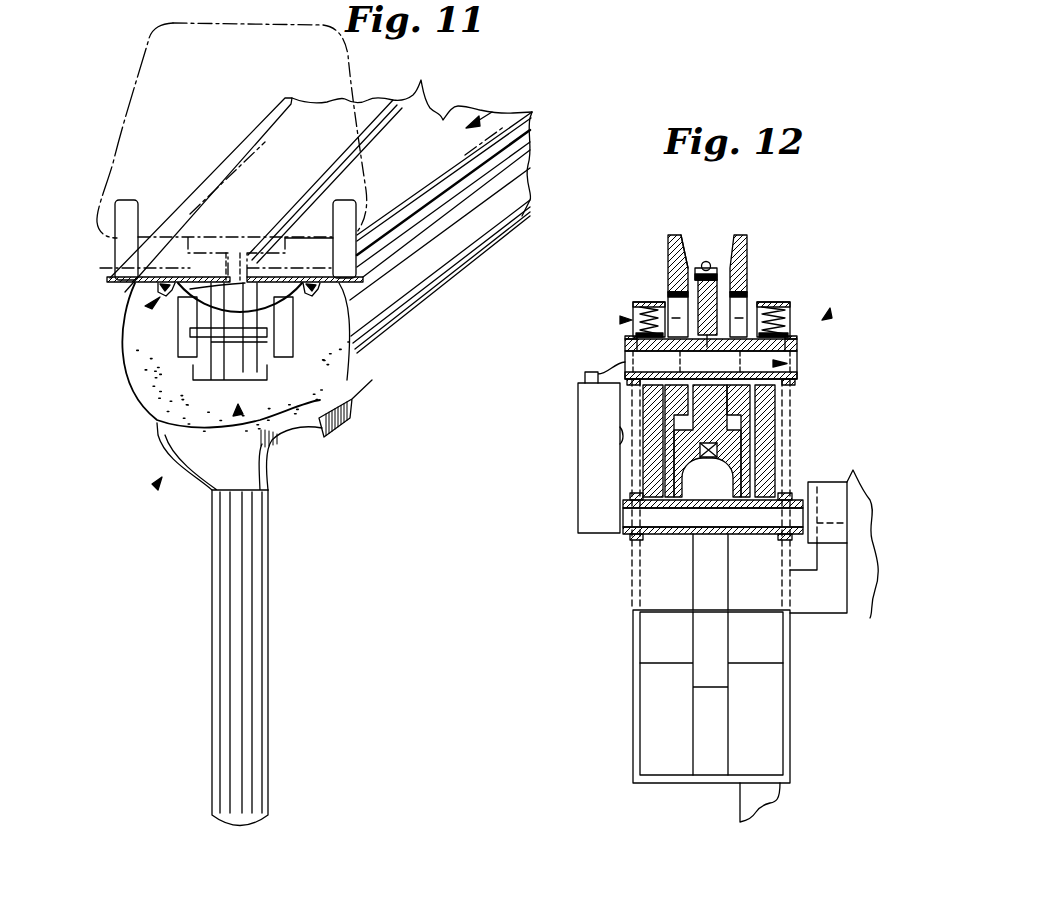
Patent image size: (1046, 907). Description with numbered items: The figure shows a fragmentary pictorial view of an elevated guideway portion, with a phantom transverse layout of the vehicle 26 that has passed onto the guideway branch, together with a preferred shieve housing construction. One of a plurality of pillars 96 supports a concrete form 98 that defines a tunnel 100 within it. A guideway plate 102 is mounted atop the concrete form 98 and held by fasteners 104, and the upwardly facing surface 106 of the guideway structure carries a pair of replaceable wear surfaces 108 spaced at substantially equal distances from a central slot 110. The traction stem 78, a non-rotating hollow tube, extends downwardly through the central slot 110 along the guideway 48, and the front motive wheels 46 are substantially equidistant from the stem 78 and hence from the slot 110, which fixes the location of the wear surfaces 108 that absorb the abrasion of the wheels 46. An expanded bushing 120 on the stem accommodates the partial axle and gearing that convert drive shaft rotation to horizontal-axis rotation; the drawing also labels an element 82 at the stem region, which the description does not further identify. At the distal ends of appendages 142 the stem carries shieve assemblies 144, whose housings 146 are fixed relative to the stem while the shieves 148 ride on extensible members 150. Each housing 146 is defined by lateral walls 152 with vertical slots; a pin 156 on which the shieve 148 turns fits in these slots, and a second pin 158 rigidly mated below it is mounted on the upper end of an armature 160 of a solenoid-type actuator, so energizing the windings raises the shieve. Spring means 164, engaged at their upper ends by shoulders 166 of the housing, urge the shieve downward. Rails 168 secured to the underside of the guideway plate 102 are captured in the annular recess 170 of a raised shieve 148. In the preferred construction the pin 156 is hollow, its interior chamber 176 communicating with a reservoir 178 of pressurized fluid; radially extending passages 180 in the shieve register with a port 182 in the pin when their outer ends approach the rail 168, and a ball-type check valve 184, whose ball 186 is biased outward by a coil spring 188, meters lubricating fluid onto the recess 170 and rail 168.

In FIG. 11, the vehicle 26 is at (148, 42).
In FIG. 11, the front motive wheels 46 is at (120, 246).
In FIG. 11, the guideway 48 is at (158, 482).
In FIG. 11, the traction stem 78 is at (155, 283).
In FIG. 11, the ball 82 is at (205, 385).
In FIG. 11, the pillar 96 is at (258, 615).
In FIG. 11, the concrete form 98 is at (338, 437).
In FIG. 11, the tunnel 100 is at (239, 410).
In FIG. 11, the guideway plate 102 is at (487, 116).
In FIG. 11, the fasteners 104 is at (188, 289).
In FIG. 11, the upwardly facing surface 106 is at (443, 120).
In FIG. 11, the wear surfaces 108 is at (262, 140).
In FIG. 11, the central slot 110 is at (416, 102).
In FIG. 11, the expanded bushing 120 is at (288, 452).
In FIG. 11, the appendages 142 is at (185, 356).
In FIG. 12, the appendages 142 is at (826, 316).
In FIG. 12, the shieve assembly 144 is at (621, 320).
In FIG. 12, the assembly housing 146 is at (647, 476).
In FIG. 11, the shieve 148 is at (182, 355).
In FIG. 12, the shieve 148 is at (675, 256).
In FIG. 12, the extensible members 150 is at (707, 553).
In FIG. 12, the lateral walls 152 is at (632, 410).
In FIG. 12, the pin 156 is at (795, 350).
In FIG. 12, the second pin 158 is at (745, 535).
In FIG. 12, the armature 160 is at (710, 647).
In FIG. 12, the spring means 164 is at (653, 306).
In FIG. 12, the shoulders 166 is at (666, 304).
In FIG. 11, the rails 168 is at (186, 290).
In FIG. 12, the annular recess 170 is at (680, 242).
In FIG. 12, the interior chamber 176 is at (800, 356).
In FIG. 12, the reservoir 178 is at (580, 458).
In FIG. 12, the radially extending passage 180 is at (740, 266).
In FIG. 12, the port 182 is at (650, 331).
In FIG. 12, the ball-type check valve 184 is at (716, 262).
In FIG. 12, the ball 186 is at (707, 261).
In FIG. 12, the coil spring 188 is at (689, 265).